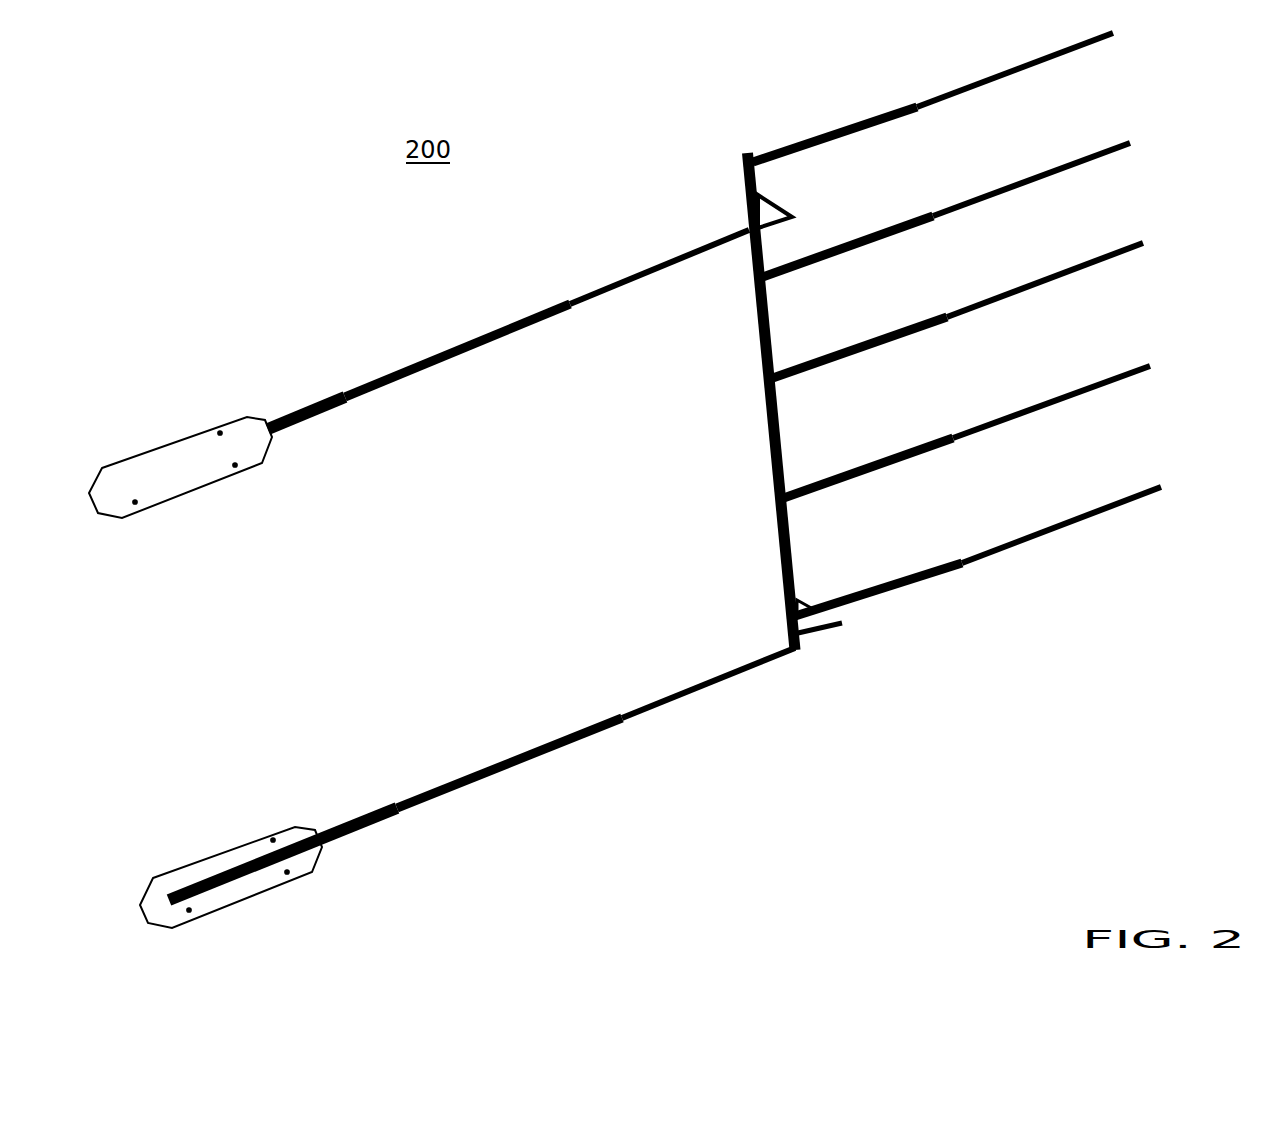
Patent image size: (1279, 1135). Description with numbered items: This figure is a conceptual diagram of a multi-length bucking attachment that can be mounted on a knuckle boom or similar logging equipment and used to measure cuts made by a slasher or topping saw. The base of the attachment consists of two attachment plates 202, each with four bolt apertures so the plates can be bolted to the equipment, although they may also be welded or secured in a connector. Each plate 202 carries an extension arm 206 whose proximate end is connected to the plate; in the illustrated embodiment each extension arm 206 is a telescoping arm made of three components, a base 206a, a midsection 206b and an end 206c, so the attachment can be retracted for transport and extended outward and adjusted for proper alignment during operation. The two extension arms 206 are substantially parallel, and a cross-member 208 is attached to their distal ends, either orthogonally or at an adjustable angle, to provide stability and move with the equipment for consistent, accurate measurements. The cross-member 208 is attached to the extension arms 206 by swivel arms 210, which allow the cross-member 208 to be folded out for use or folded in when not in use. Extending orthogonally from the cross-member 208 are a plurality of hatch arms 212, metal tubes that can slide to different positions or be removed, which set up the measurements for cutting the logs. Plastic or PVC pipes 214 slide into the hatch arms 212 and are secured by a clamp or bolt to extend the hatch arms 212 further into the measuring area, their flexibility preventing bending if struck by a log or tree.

The attachment plate 202 is at (227, 418).
The extension arm 206 is at (422, 358).
The base 206a is at (393, 815).
The midsection 206b is at (577, 745).
The end 206c is at (768, 660).
The cross-member 208 is at (765, 417).
The swivel arm 210 is at (788, 206).
The hatch arm 212 is at (864, 121).
The PVC pipe 214 is at (959, 90).